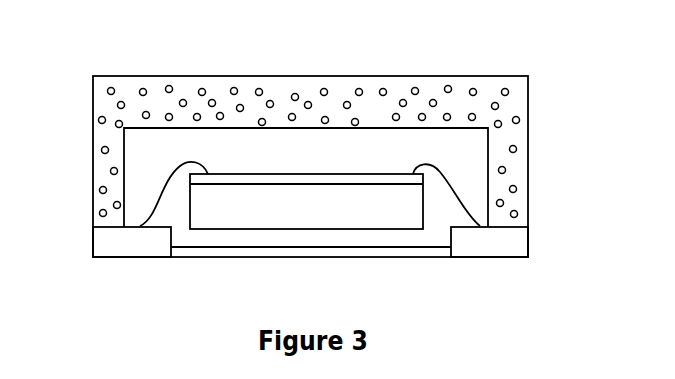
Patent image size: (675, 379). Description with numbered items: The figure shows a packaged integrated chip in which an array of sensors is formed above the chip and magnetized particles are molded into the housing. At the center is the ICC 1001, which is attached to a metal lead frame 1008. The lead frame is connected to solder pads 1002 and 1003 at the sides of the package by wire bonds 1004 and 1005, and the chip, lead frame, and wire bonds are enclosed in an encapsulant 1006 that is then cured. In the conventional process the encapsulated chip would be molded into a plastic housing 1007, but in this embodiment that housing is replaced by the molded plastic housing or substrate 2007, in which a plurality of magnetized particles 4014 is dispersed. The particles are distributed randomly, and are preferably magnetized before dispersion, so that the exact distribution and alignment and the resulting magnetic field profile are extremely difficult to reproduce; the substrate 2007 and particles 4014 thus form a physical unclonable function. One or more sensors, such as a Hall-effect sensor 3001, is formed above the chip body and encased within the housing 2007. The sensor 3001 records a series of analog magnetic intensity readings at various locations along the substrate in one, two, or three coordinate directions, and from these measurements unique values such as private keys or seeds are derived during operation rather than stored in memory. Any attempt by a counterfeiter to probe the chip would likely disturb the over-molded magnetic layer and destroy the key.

The ICC 1001 is at (380, 220).
The solder pad 1002 is at (118, 248).
The solder pad 1003 is at (520, 242).
The wire bond 1004 is at (165, 182).
The wire bond 1005 is at (452, 187).
The encapsulant 1006 is at (370, 145).
The plastic housing 1007 is at (233, 249).
The metal lead frame 1008 is at (277, 165).
The substrate 2007 is at (520, 108).
The Hall-effect sensor 3001 is at (230, 172).
The magnetized particles 4014 is at (477, 88).